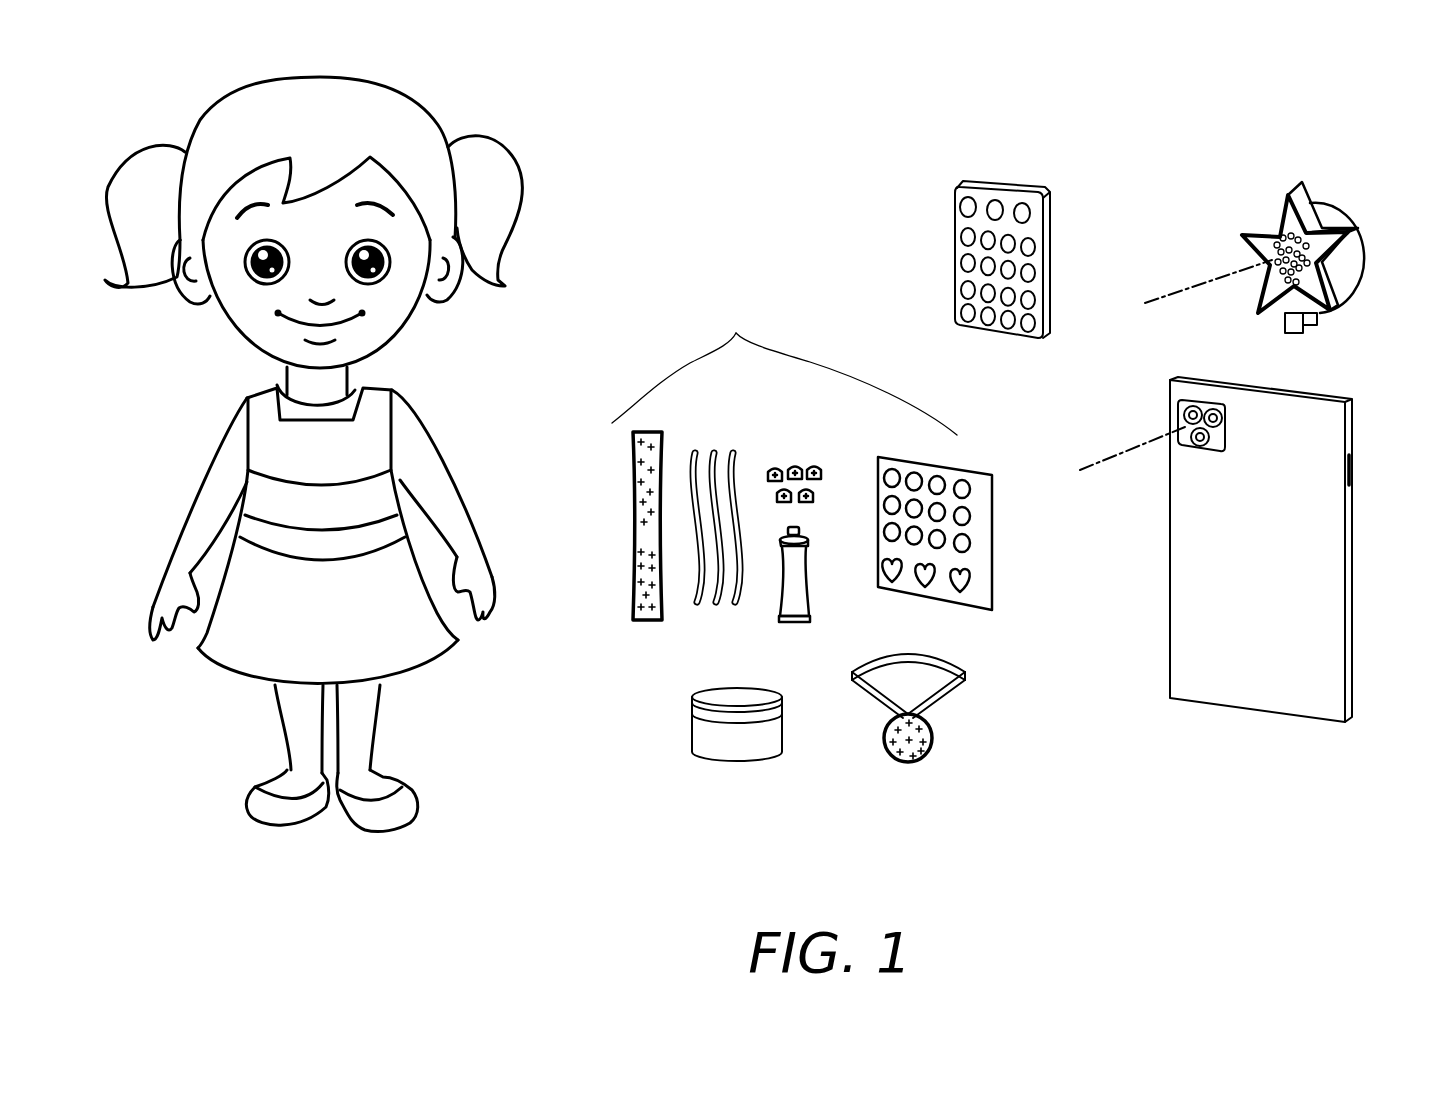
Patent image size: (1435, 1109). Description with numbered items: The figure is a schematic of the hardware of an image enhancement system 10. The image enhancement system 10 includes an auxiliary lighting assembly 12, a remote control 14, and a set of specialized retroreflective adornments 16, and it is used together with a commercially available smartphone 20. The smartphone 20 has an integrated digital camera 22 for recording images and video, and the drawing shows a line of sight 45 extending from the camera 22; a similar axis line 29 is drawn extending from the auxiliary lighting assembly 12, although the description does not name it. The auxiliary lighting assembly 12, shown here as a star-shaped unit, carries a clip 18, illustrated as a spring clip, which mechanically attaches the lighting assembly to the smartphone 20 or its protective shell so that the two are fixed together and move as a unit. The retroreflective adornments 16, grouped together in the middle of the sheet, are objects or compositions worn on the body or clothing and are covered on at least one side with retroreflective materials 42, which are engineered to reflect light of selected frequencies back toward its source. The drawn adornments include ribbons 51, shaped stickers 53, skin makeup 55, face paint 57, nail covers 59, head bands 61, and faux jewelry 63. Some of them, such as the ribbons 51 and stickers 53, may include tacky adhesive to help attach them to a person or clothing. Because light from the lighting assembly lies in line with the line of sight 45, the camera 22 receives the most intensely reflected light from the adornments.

The image enhancement system 10 is at (836, 158).
The auxiliary lighting assembly 12 is at (1325, 210).
The remote control 14 is at (1030, 187).
The retroreflective adornments 16 is at (736, 333).
The clip 18 is at (1312, 325).
The smartphone 20 is at (1352, 440).
The digital camera 22 is at (1180, 418).
The axis line 29 is at (1212, 279).
The retroreflective materials 42 is at (630, 605).
The line of sight 45 is at (1128, 455).
The ribbons 51 is at (718, 600).
The shaped stickers 53 is at (967, 540).
The skin makeup 55 is at (690, 726).
The face paint 57 is at (800, 600).
The nail covers 59 is at (795, 452).
The head bands 61 is at (634, 515).
The faux jewelry 63 is at (945, 697).